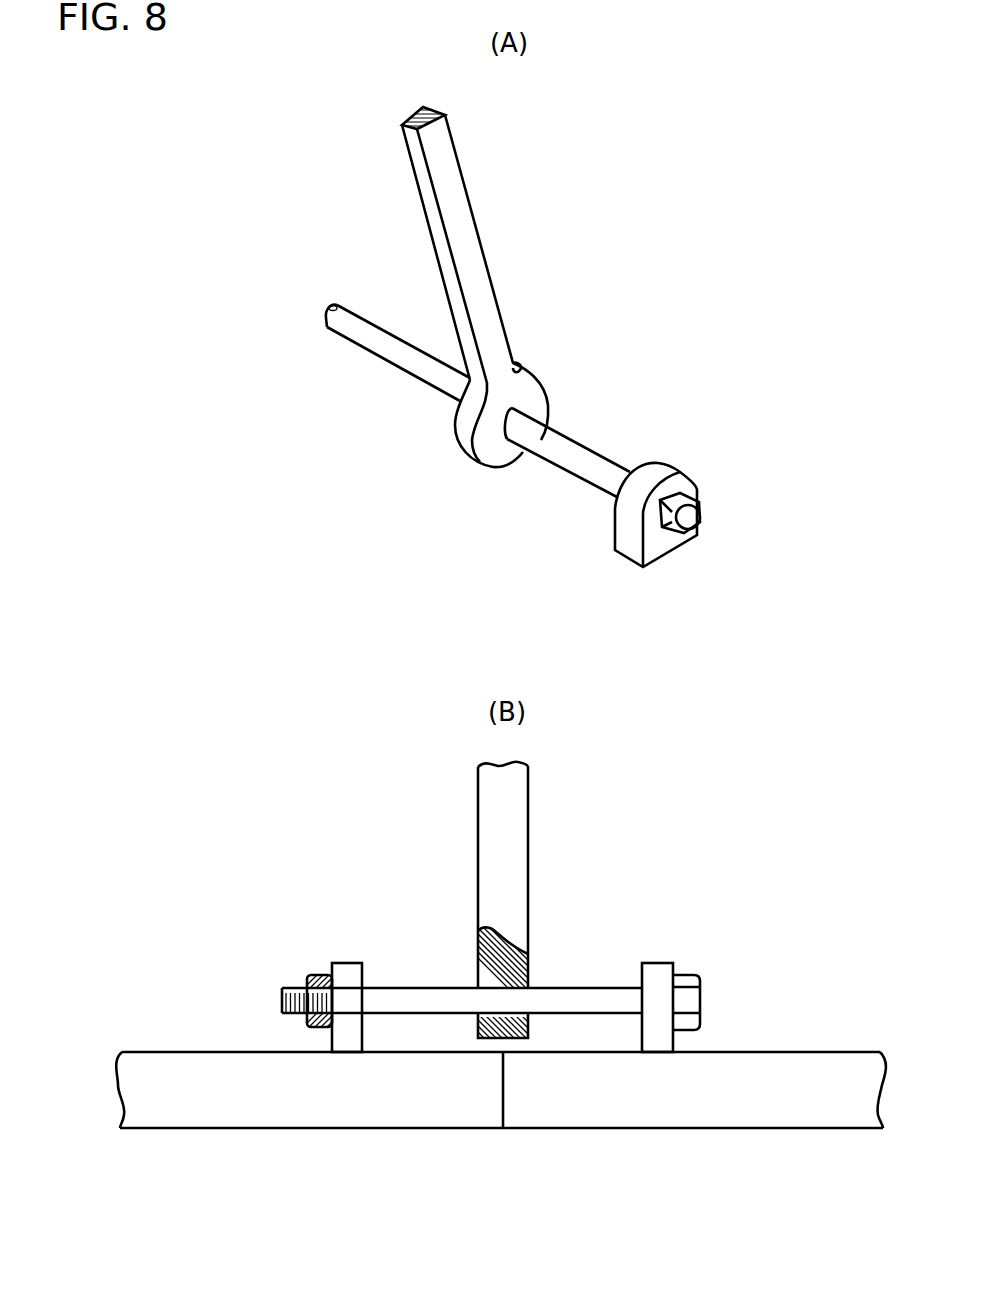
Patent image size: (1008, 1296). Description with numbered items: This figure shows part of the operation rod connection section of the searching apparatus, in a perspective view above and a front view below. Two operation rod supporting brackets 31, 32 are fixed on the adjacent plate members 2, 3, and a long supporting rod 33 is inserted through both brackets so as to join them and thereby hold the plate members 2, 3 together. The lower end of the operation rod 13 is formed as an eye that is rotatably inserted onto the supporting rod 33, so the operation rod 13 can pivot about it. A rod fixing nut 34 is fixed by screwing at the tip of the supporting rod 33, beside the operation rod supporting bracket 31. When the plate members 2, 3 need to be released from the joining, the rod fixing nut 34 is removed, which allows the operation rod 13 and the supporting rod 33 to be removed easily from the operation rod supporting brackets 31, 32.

The operation rod 13 is at (457, 215).
The supporting rod 33 is at (558, 465).
The operation rod supporting bracket 32 is at (677, 460).
The operation rod supporting bracket 31 is at (348, 960).
The rod fixing nut 34 is at (310, 975).
The plate member 2 is at (338, 1122).
The plate member 3 is at (682, 1125).